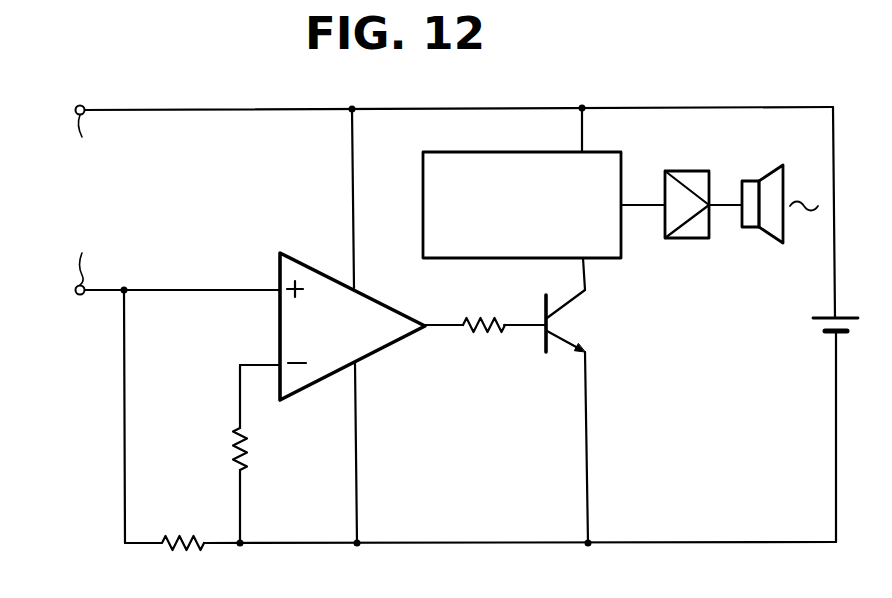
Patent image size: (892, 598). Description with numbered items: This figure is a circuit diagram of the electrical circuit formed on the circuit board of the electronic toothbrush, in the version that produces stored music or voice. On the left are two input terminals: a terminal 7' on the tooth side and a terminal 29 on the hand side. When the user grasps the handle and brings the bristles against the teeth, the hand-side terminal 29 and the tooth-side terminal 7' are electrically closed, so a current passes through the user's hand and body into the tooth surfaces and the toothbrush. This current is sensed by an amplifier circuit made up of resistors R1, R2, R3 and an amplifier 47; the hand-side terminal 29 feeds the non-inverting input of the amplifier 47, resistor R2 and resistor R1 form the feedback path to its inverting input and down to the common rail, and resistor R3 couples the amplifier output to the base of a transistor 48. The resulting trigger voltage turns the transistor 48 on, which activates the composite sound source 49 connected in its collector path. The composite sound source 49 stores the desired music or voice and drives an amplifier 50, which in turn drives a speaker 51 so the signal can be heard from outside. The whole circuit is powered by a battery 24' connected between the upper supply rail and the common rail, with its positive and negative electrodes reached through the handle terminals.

The terminal on the tooth side 7' is at (98, 106).
The terminal on the hand side 29 is at (80, 295).
The amplifier 47 is at (383, 352).
The transistor 48 is at (558, 345).
The composite sound source 49 is at (622, 158).
The amplifier 50 is at (688, 239).
The speaker 51 is at (753, 229).
The battery 24' is at (805, 332).
The resistor R1 is at (174, 541).
The resistor R2 is at (246, 452).
The resistor R3 is at (483, 332).